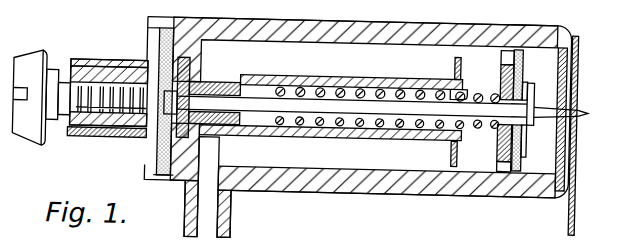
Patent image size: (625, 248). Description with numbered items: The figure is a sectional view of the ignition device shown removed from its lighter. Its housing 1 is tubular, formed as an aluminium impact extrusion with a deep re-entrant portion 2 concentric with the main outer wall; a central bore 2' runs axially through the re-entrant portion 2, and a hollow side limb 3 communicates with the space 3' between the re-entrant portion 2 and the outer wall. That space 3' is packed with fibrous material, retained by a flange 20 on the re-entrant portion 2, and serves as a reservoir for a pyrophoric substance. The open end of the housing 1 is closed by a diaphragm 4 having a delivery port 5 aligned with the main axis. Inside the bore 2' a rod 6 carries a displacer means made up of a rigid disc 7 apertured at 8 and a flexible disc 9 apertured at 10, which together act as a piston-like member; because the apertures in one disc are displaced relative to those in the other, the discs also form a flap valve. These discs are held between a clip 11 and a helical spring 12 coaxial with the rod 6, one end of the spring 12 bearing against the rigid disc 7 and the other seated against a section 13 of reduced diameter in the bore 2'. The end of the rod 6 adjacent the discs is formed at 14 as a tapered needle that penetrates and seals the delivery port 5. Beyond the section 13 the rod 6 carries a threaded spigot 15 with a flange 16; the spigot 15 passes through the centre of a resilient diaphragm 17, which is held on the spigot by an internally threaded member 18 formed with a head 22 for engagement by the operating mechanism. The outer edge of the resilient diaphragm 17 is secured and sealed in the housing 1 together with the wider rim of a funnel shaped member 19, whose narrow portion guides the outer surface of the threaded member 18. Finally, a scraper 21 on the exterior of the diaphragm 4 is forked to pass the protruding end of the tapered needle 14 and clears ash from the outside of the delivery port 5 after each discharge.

The housing 1 is at (342, 188).
The re-entrant portion 2 is at (341, 74).
The central bore 2' is at (388, 89).
The hollow side limb 3 is at (193, 187).
The space 3' is at (386, 196).
The diaphragm 4 is at (567, 71).
The delivery port 5 is at (575, 106).
The rod 6 is at (330, 113).
The rigid disc 7 is at (498, 146).
The aperture 8 is at (505, 49).
The flexible disc 9 is at (522, 55).
The aperture 10 is at (523, 152).
The clip 11 is at (527, 144).
The helical spring 12 is at (380, 76).
The section of reduced diameter 13 is at (257, 133).
The tapered needle 14 is at (557, 107).
The threaded spigot 15 is at (150, 134).
The flange 16 is at (203, 144).
The resilient diaphragm 17 is at (155, 59).
The internally threaded member 18 is at (85, 143).
The funnel shaped member 19 is at (98, 63).
The flange 20 is at (455, 64).
The scraper 21 is at (570, 212).
The head 22 is at (32, 63).